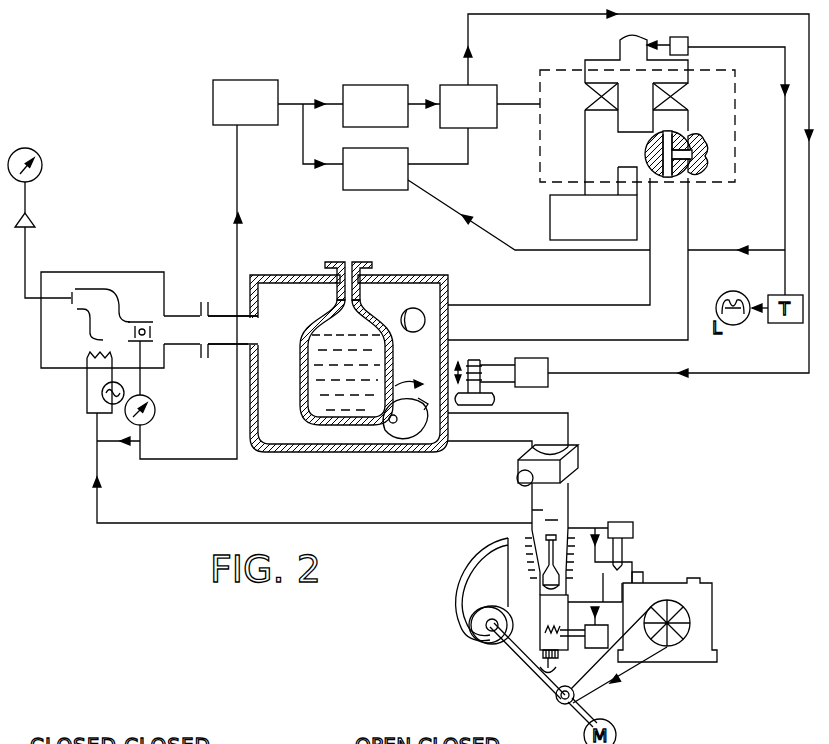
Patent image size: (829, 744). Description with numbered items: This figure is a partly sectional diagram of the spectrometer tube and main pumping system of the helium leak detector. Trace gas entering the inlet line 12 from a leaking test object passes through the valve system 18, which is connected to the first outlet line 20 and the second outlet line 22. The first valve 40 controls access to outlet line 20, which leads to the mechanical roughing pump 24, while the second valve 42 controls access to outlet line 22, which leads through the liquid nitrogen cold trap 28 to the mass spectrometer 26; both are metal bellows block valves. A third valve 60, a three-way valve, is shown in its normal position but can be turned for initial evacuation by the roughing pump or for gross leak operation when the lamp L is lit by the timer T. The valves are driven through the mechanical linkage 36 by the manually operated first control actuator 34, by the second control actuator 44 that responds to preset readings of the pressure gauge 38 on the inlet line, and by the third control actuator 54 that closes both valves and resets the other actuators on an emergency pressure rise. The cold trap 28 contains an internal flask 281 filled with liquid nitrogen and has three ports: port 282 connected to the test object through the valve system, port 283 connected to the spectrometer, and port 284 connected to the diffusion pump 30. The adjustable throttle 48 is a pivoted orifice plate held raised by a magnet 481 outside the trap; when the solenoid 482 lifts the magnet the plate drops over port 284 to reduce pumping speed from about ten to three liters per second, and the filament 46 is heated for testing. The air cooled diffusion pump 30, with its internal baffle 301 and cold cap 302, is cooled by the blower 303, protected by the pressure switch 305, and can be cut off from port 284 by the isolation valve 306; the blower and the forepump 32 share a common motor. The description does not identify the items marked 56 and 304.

The inlet line 12 is at (634, 83).
The valve system 18 is at (547, 87).
The first outlet line 20 is at (592, 168).
The second outlet line 22 is at (670, 208).
The roughing pump 24 is at (580, 228).
The mass spectrometer 26 is at (140, 287).
The liquid nitrogen cold trap 28 is at (297, 290).
The diffusion pump 30 is at (543, 617).
The forepump 32 is at (657, 590).
The first control actuator 34 is at (361, 117).
The mechanical linkage 36 is at (454, 118).
The pressure gauge 38 is at (683, 45).
The first valve 40 is at (592, 100).
The second valve 42 is at (675, 100).
The second control actuator 44 is at (361, 180).
The filament 46 is at (97, 362).
The adjustable throttle 48 is at (380, 432).
The third control actuator 54 is at (231, 114).
The pressure switch 56 is at (150, 352).
The third valve 60 is at (690, 142).
The internal flask 281 is at (358, 337).
The port 282 is at (418, 315).
The port 283 is at (248, 330).
The port 284 is at (392, 452).
The internal baffle 301 is at (553, 510).
The cold cap 302 is at (567, 535).
The blower 303 is at (484, 578).
The connecting rod 304 is at (537, 687).
The pressure switch 305 is at (635, 528).
The isolation valve 306 is at (575, 452).
The magnet 481 is at (494, 400).
The solenoid 482 is at (548, 367).